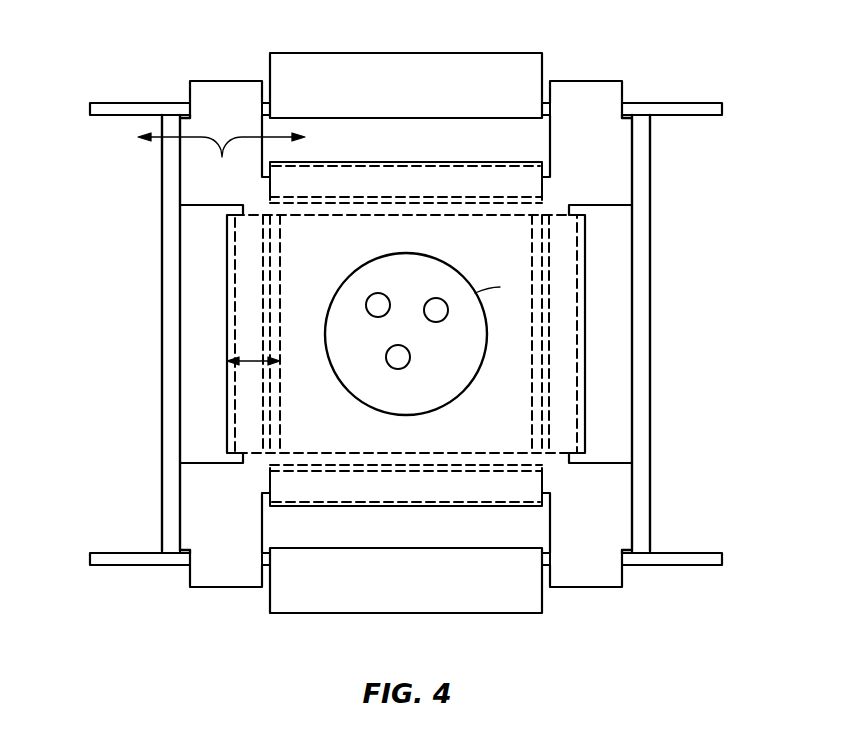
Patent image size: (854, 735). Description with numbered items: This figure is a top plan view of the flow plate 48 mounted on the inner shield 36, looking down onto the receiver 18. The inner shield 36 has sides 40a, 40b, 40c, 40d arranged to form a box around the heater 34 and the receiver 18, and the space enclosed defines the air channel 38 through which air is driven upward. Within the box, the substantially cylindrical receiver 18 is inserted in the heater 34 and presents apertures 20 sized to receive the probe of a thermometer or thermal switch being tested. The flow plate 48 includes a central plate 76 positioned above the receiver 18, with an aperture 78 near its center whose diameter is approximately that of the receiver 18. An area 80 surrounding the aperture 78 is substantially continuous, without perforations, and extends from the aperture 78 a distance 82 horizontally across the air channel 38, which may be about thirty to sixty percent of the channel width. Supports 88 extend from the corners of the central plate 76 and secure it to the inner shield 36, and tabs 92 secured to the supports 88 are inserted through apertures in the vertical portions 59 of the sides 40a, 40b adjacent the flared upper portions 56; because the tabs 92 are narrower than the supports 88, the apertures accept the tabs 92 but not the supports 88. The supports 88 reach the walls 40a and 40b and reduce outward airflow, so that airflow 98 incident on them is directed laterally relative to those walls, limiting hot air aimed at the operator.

The receiver 18 is at (407, 288).
The apertures 20 is at (410, 354).
The heater 34 is at (497, 402).
The inner shield 36 is at (680, 321).
The air channel 38 is at (188, 376).
The side 40a is at (265, 100).
The side 40b is at (263, 590).
The side 40c is at (168, 242).
The side 40d is at (642, 190).
The flow plate 48 is at (438, 146).
The flared upper portions 56 is at (388, 97).
The vertical portions 59 is at (133, 108).
The central plate 76 is at (338, 162).
The aperture 78 is at (500, 287).
The area 80 is at (322, 247).
The distance 82 is at (253, 362).
The supports 88 is at (218, 173).
The tabs 92 is at (223, 100).
The airflow 98 is at (277, 128).